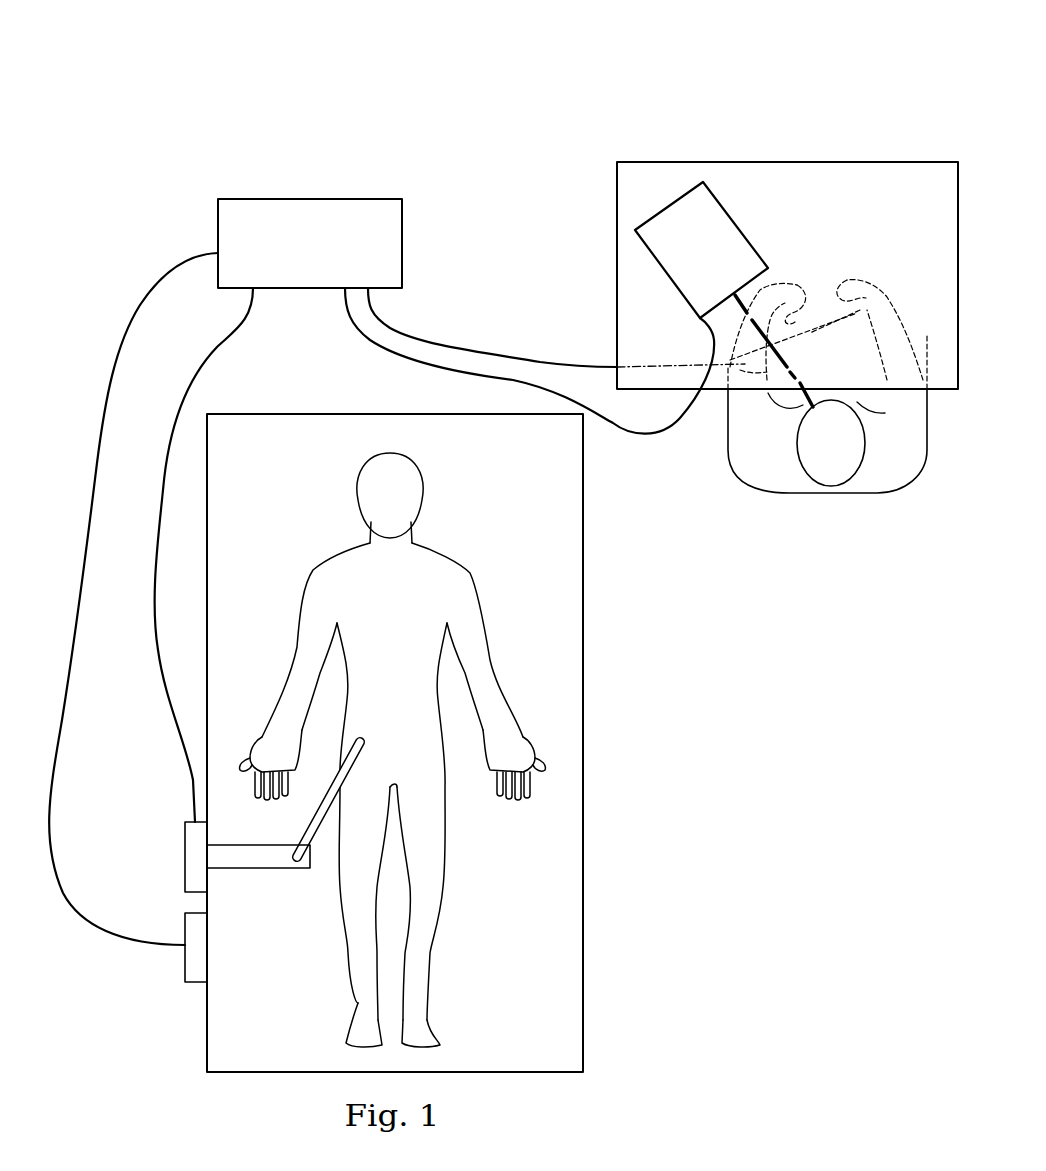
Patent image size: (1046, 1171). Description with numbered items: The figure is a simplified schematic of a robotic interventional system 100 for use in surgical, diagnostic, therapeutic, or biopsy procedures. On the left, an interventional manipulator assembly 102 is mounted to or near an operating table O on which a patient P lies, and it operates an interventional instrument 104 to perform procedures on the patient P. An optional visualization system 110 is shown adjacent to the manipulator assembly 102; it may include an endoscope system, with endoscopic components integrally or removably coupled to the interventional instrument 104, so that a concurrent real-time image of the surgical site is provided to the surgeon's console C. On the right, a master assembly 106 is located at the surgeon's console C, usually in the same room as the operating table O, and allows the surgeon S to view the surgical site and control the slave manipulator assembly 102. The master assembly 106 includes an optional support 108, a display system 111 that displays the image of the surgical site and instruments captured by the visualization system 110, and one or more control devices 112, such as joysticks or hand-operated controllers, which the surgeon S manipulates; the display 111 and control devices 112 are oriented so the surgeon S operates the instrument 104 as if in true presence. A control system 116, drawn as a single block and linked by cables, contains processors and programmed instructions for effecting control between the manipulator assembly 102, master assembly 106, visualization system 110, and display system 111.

The robotic interventional system 100 is at (398, 70).
The interventional manipulator assembly 102 is at (185, 858).
The interventional instrument 104 is at (362, 758).
The master assembly 106 is at (787, 235).
The support 108 is at (903, 162).
The visualization system 110 is at (185, 967).
The display system 111 is at (737, 221).
The control device 112 is at (813, 282).
The control system 116 is at (312, 197).
The surgeon's console C is at (808, 162).
The operating table O is at (587, 742).
The patient P is at (447, 553).
The surgeon S is at (870, 498).